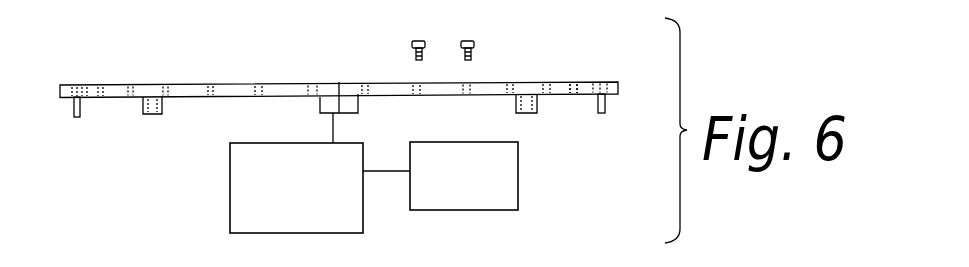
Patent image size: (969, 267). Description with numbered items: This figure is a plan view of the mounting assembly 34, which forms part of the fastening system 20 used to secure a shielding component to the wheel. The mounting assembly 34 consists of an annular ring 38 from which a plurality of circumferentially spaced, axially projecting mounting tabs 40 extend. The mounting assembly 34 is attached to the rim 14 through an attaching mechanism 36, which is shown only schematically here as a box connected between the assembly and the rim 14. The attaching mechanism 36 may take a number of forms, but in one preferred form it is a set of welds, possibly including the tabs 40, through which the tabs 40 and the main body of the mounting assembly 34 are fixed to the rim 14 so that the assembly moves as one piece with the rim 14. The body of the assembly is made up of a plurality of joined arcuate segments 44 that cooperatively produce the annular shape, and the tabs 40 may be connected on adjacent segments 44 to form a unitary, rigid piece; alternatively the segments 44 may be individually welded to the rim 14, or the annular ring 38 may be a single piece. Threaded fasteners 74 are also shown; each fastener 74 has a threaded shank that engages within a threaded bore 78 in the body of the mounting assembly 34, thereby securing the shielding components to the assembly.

The fastening system 20 is at (193, 132).
The mounting assembly 34 is at (497, 69).
The annular ring 38 is at (234, 83).
The mounting tabs 40 is at (77, 117).
The threaded fasteners 74 is at (467, 40).
The threaded bore 78 is at (575, 88).
The attaching mechanism 36 is at (318, 226).
The rim 14 is at (473, 198).
The arcuate segments 44 is at (239, 261).